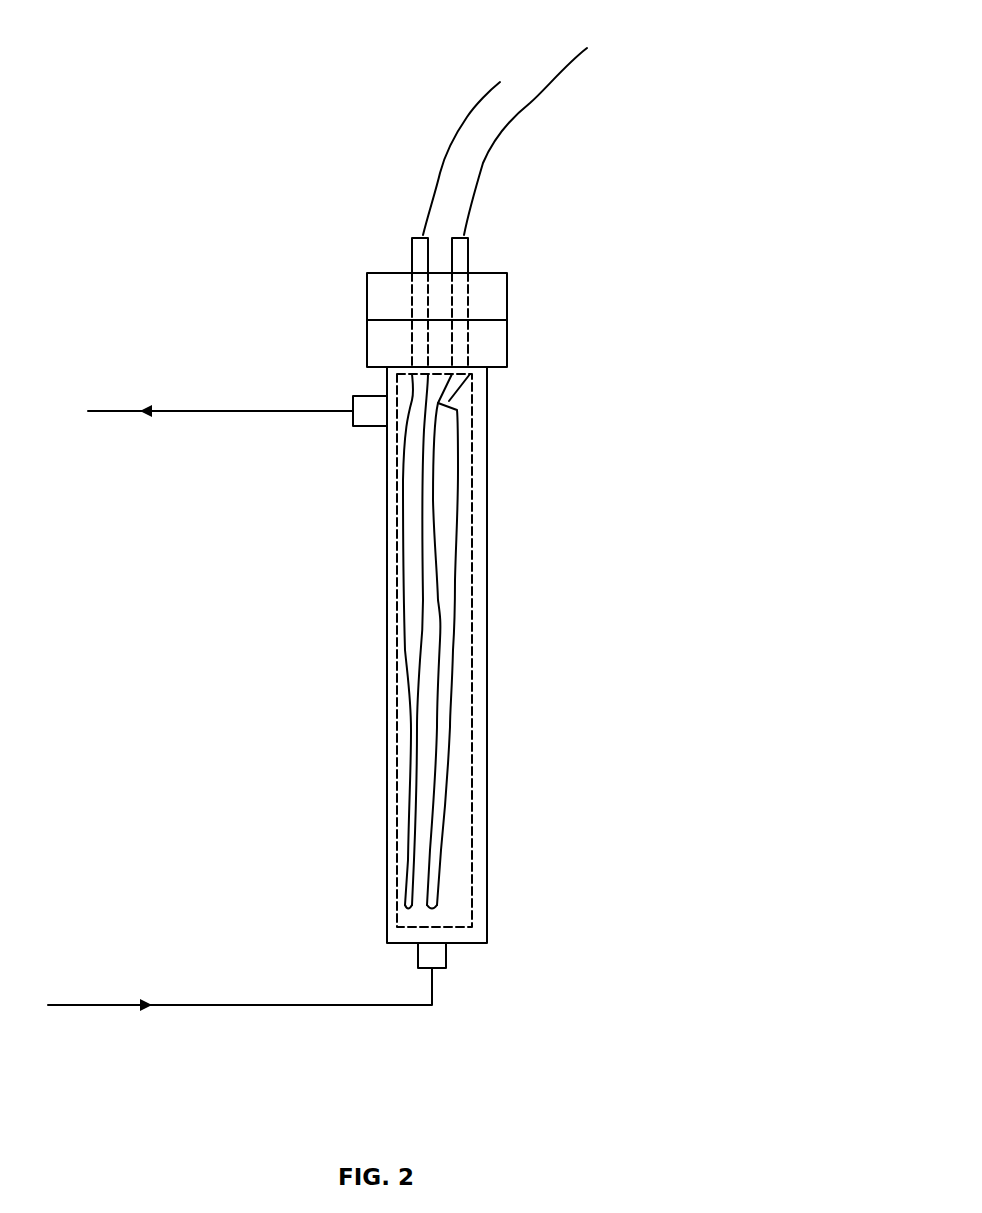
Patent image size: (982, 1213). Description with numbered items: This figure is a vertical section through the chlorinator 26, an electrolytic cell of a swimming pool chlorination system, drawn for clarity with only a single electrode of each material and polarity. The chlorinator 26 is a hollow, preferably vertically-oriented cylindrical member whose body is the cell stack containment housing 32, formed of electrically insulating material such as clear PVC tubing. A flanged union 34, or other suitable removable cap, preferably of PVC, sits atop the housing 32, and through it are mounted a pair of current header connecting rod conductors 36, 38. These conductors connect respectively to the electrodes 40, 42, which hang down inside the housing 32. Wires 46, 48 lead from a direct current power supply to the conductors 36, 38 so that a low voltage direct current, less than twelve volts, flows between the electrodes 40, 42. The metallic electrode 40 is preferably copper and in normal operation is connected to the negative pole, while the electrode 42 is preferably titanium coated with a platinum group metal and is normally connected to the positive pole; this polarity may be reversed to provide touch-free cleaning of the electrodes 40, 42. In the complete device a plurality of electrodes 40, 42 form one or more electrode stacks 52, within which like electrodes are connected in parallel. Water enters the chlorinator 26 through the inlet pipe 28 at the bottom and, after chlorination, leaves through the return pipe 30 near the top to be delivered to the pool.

The chlorinator 26 is at (753, 391).
The inlet pipe 28 is at (202, 1005).
The return pipe 30 is at (245, 411).
The cell stack containment housing 32 is at (487, 728).
The flanged union 34 is at (503, 282).
The current header connecting rod conductor 36 is at (412, 248).
The current header connecting rod conductor 38 is at (462, 243).
The electrode 40 is at (405, 642).
The electrode 42 is at (443, 788).
The wire 46 is at (470, 125).
The wire 48 is at (540, 102).
The electrode stack 52 is at (472, 406).